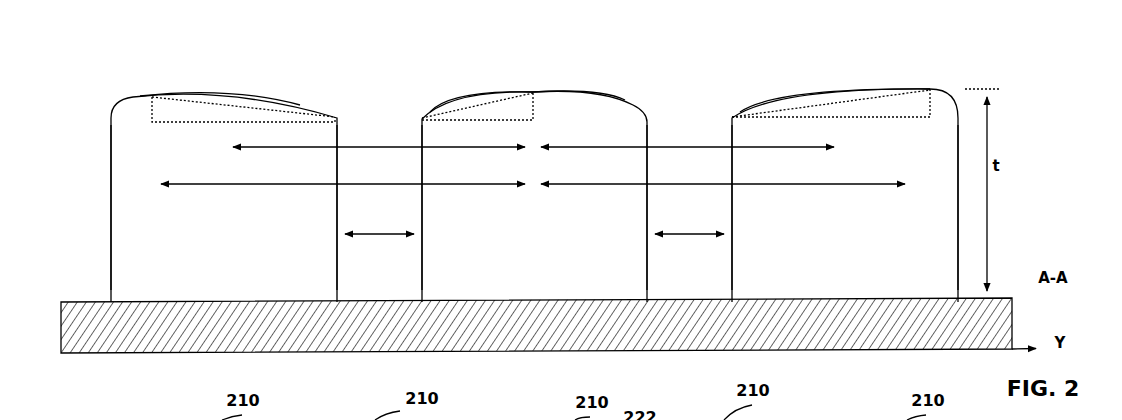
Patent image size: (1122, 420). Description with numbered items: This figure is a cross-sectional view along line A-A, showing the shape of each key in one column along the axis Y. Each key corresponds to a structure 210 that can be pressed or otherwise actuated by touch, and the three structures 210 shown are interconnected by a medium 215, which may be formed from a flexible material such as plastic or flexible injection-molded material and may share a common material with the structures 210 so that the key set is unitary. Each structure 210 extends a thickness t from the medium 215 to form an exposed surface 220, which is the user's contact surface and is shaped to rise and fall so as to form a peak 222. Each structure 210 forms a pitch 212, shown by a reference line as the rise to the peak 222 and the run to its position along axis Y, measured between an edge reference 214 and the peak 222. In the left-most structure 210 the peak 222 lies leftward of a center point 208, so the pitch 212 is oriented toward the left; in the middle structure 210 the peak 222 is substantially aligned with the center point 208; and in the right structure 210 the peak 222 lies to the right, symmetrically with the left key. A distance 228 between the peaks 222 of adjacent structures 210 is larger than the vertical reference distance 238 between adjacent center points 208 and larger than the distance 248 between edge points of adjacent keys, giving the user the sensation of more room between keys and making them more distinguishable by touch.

The structure 210 is at (292, 76).
The edge reference 214 is at (111, 113).
The peak 222 is at (152, 97).
The exposed surface 220 is at (213, 95).
The center point 208 is at (223, 95).
The pitch 212 is at (228, 106).
The medium 215 is at (536, 325).
The vertical reference distance 238 is at (533, 158).
The distance 228 is at (533, 196).
The distance 248 is at (534, 245).